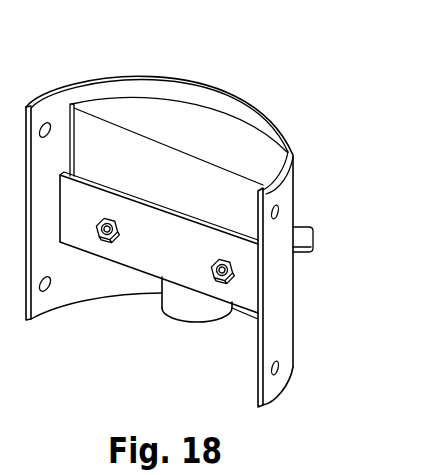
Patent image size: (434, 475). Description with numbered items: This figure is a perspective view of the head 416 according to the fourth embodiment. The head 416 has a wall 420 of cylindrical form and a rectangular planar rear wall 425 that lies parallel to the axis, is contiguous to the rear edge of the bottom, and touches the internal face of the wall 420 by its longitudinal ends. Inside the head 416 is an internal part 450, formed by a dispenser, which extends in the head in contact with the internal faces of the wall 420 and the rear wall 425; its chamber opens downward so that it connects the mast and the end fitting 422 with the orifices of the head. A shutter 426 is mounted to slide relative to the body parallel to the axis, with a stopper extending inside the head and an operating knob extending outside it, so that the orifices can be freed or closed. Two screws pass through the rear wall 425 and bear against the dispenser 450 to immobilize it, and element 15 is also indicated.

The head 416 is at (229, 82).
The internal part 450 is at (150, 110).
The shutter 426 is at (302, 237).
The wall 420 is at (280, 330).
The rear wall 425 is at (123, 262).
The end fitting 422 is at (168, 312).
The pin 15 is at (208, 311).